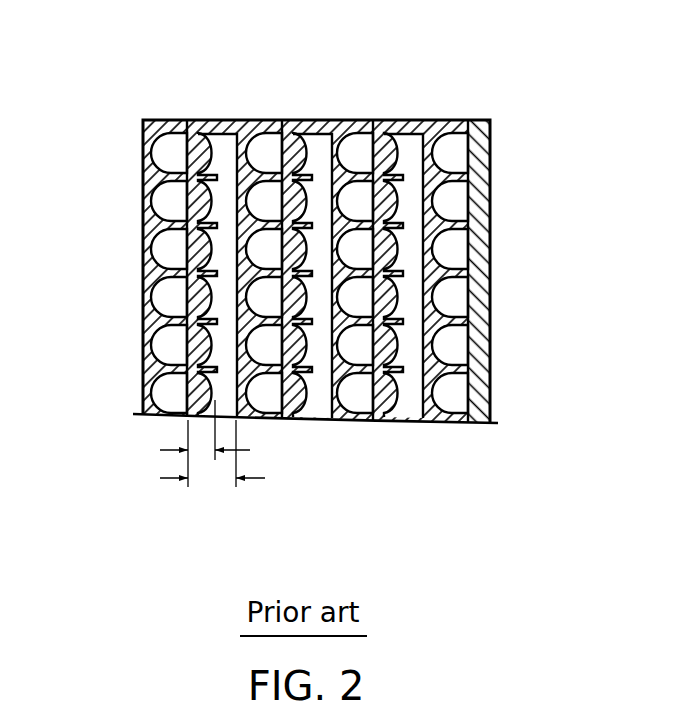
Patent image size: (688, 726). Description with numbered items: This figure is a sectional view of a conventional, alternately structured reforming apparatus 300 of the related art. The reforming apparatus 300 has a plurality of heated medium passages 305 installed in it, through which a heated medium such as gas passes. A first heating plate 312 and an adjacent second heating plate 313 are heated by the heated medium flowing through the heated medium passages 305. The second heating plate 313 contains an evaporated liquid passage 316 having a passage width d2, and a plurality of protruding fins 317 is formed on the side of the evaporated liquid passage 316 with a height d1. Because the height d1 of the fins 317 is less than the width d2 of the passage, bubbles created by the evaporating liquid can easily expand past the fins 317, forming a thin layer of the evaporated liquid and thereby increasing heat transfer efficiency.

The reforming apparatus 300 is at (513, 142).
The heated medium passages 305 is at (163, 243).
The first heating plate 312 is at (257, 122).
The second heating plate 313 is at (228, 125).
The evaporated liquid passage 316 is at (210, 140).
The protruding fins 317 is at (216, 272).
The height of the fins d1 is at (197, 452).
The passage width d2 is at (213, 480).